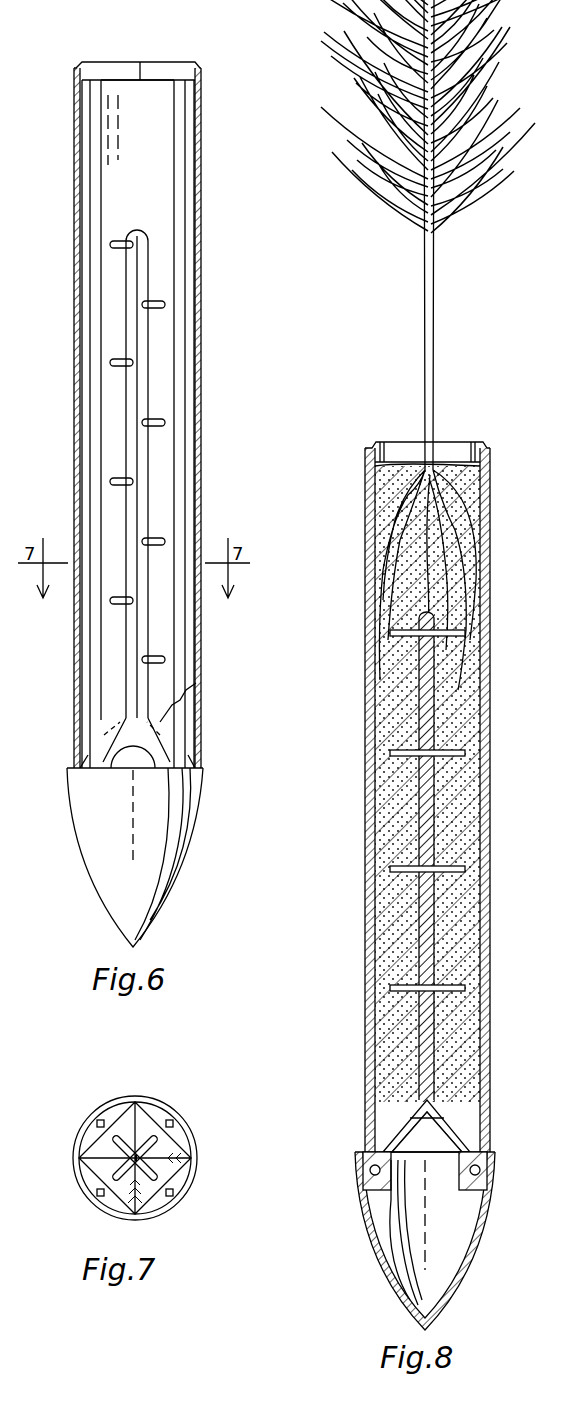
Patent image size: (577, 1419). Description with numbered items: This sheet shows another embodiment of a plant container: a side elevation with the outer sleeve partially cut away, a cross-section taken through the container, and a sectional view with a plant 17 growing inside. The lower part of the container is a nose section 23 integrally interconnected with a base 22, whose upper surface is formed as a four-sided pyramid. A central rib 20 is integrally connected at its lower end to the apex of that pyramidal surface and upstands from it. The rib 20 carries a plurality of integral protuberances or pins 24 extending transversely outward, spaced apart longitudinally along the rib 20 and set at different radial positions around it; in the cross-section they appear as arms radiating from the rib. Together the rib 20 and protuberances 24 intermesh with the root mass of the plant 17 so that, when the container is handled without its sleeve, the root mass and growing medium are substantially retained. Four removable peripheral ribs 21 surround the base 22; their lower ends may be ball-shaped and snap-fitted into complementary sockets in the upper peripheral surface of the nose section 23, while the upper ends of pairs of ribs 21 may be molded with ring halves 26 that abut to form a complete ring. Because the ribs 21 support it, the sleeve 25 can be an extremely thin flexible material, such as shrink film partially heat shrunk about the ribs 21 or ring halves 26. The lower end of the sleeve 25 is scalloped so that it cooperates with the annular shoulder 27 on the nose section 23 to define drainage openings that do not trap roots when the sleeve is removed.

In FIG. 8, the plant 17 is at (423, 270).
In FIG. 6, the central rib 20 is at (150, 375).
In FIG. 7, the central rib 20 is at (150, 1155).
In FIG. 8, the central rib 20 is at (412, 768).
In FIG. 6, the removable peripheral ribs 21 is at (92, 447).
In FIG. 8, the removable peripheral ribs 21 is at (366, 915).
In FIG. 6, the base 22 is at (106, 740).
In FIG. 7, the base 22 is at (100, 1144).
In FIG. 8, the base 22 is at (366, 1118).
In FIG. 6, the nose section 23 is at (80, 850).
In FIG. 8, the nose section 23 is at (486, 1232).
In FIG. 6, the protuberances 24 is at (118, 240).
In FIG. 7, the protuberances 24 is at (125, 1125).
In FIG. 8, the protuberances 24 is at (392, 750).
In FIG. 6, the sleeve 25 is at (196, 190).
In FIG. 8, the sleeve 25 is at (366, 645).
In FIG. 6, the ring halves 26 is at (116, 62).
In FIG. 8, the ring halves 26 is at (450, 442).
In FIG. 6, the annular shoulder 27 is at (72, 766).